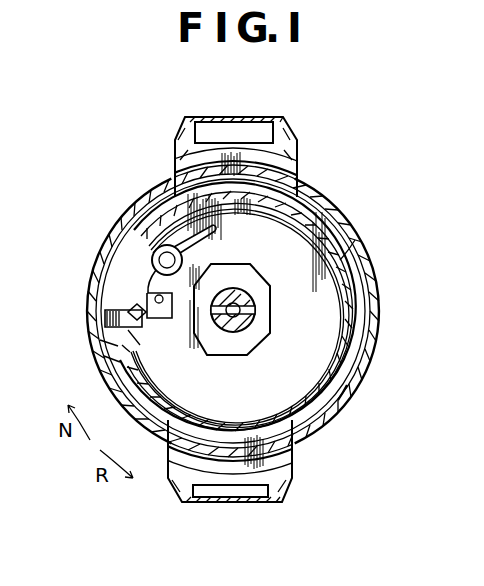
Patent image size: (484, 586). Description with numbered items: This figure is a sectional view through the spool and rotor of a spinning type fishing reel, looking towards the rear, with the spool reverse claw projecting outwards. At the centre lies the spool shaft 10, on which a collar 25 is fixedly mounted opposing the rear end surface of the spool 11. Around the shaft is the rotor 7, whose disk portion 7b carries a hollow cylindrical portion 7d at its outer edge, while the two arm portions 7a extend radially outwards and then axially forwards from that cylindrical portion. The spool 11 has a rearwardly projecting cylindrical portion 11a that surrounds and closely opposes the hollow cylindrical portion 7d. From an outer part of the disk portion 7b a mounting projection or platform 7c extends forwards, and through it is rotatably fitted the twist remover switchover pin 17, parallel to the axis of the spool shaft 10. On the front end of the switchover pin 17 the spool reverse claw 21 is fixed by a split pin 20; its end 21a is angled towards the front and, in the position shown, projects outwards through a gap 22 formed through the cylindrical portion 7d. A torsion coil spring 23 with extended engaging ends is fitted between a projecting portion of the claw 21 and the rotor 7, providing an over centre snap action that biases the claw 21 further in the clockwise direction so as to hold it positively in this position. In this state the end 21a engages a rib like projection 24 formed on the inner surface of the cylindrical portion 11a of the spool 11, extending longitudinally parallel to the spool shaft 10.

The rotor 7 is at (366, 297).
The arm portions 7a is at (285, 128).
The disk portion 7b is at (333, 335).
The mounting projection or platform 7c is at (133, 335).
The hollow cylindrical portion 7d is at (345, 407).
The spool shaft 10 is at (238, 302).
The spool 11 is at (340, 205).
The rearwardly projecting cylindrical portion 11a is at (353, 227).
The twist remover switchover pin 17 is at (122, 282).
The split pin 20 is at (128, 330).
The spool reverse claw 21 is at (105, 295).
The end of spool reverse claw 21a is at (102, 315).
The gap 22 is at (108, 360).
The torsion coil spring 23 is at (128, 230).
The rib like projection 24 is at (105, 342).
The collar 25 is at (251, 333).